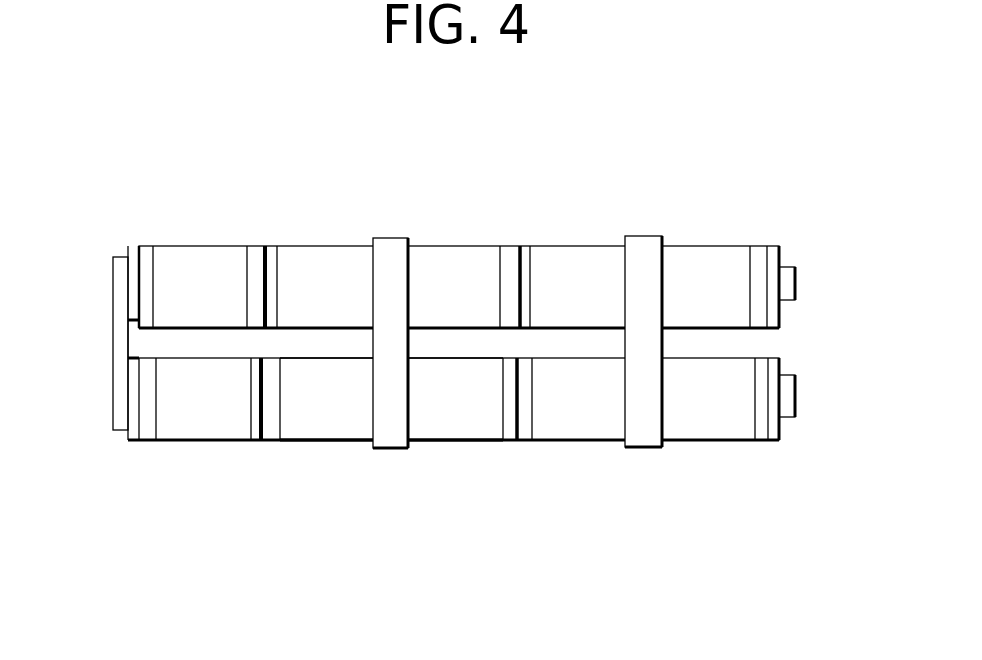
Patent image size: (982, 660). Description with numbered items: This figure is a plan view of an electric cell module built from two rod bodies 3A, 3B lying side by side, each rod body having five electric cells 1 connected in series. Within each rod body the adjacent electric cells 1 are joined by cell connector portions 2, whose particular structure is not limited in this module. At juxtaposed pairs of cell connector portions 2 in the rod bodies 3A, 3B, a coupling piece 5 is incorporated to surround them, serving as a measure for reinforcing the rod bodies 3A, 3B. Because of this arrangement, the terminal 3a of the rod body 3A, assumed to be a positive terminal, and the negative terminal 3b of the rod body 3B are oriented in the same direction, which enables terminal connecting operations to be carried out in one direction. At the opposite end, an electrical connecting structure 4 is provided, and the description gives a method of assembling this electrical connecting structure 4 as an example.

The electric cell 1 is at (328, 432).
The cell connector portion 2 is at (271, 432).
The rod body 3A is at (492, 465).
The rod body 3B is at (498, 221).
The terminal 3a is at (786, 405).
The terminal 3b is at (786, 272).
The electrical connecting structure 4 is at (118, 300).
The coupling piece 5 is at (391, 250).